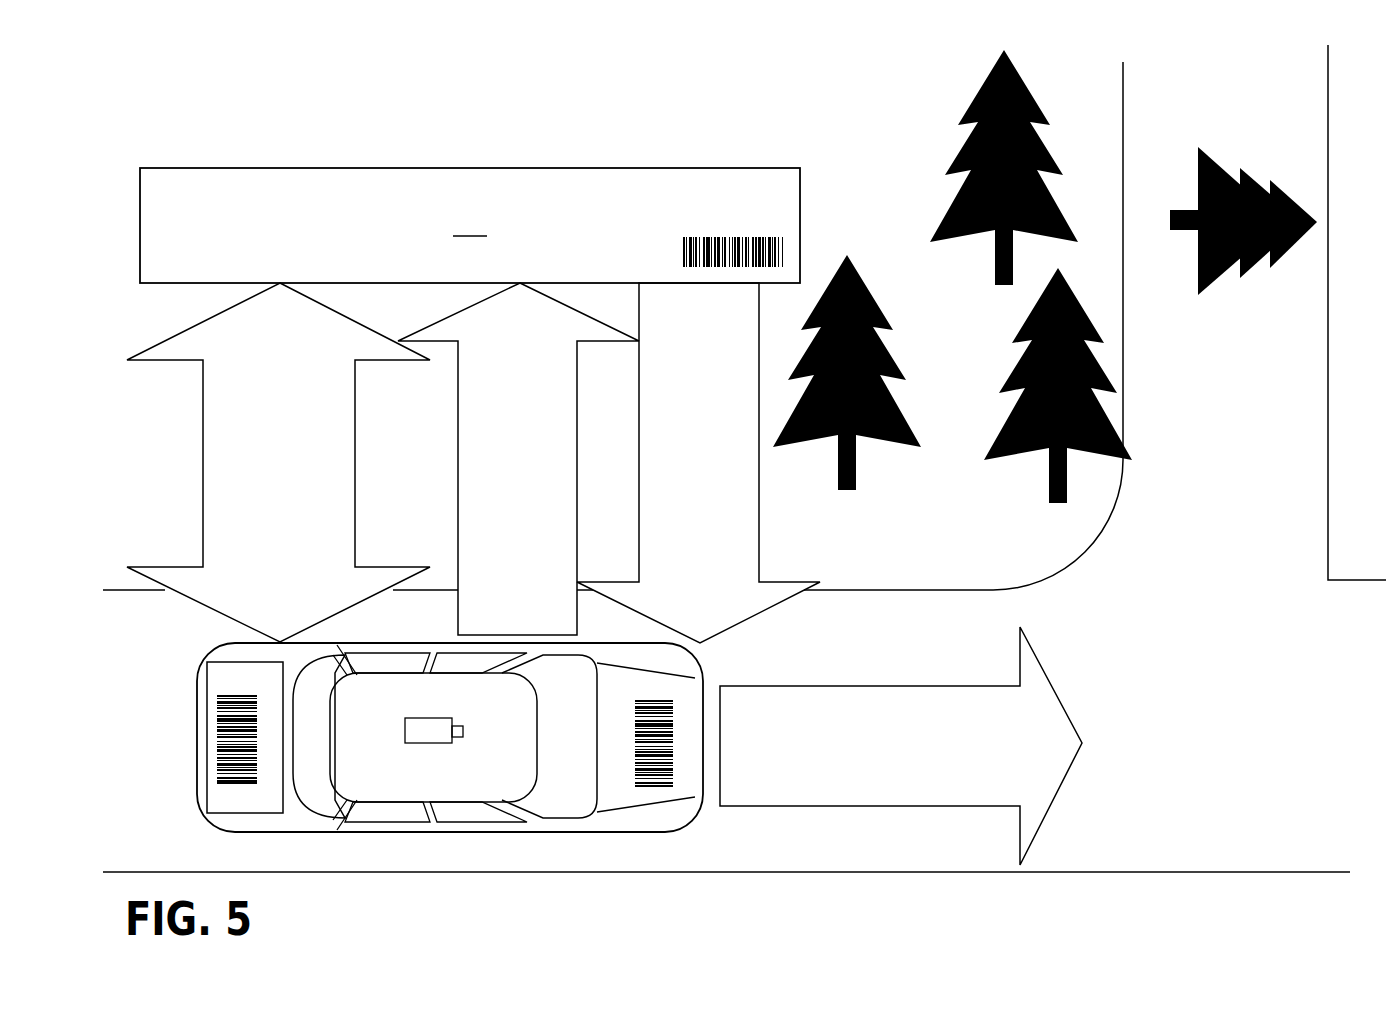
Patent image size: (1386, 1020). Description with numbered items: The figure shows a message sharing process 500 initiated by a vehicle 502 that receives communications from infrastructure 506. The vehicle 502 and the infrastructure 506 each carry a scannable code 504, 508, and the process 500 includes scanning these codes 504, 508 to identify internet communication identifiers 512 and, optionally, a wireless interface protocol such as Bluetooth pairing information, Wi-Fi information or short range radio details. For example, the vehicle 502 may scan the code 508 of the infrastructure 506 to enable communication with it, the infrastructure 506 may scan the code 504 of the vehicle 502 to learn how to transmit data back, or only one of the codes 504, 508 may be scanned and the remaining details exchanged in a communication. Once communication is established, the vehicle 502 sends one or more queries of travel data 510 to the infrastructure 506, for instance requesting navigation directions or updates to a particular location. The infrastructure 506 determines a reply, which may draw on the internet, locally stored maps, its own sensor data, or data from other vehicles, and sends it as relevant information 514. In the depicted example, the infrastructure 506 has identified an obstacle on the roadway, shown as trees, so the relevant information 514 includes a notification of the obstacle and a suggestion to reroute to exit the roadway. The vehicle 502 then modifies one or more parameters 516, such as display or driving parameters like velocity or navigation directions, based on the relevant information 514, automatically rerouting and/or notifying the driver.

The message sharing process 500 is at (211, 38).
The vehicle 502 is at (203, 812).
The code 504 is at (648, 787).
The infrastructure 506 is at (470, 225).
The code 508 is at (765, 237).
The queries of travel data 510 is at (458, 480).
The internet communication identifiers 512 is at (203, 463).
The relevant information 514 is at (760, 527).
The parameters 516 is at (895, 686).